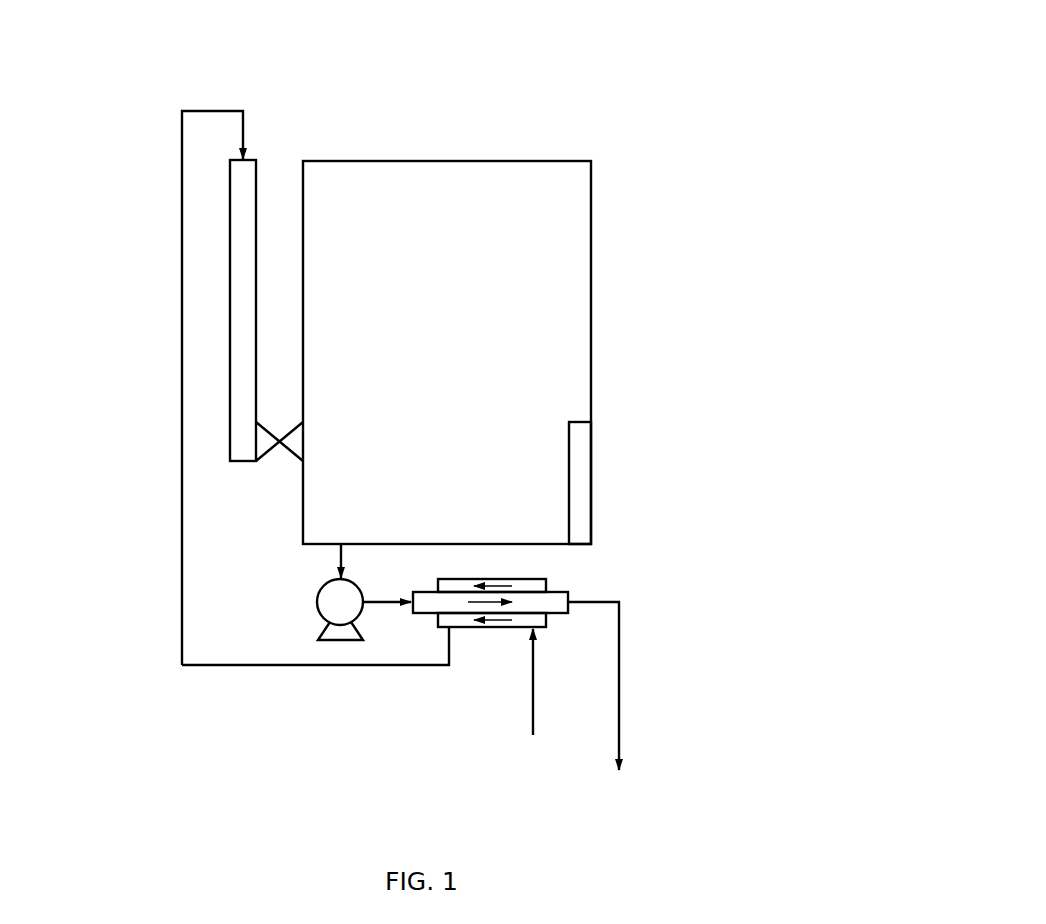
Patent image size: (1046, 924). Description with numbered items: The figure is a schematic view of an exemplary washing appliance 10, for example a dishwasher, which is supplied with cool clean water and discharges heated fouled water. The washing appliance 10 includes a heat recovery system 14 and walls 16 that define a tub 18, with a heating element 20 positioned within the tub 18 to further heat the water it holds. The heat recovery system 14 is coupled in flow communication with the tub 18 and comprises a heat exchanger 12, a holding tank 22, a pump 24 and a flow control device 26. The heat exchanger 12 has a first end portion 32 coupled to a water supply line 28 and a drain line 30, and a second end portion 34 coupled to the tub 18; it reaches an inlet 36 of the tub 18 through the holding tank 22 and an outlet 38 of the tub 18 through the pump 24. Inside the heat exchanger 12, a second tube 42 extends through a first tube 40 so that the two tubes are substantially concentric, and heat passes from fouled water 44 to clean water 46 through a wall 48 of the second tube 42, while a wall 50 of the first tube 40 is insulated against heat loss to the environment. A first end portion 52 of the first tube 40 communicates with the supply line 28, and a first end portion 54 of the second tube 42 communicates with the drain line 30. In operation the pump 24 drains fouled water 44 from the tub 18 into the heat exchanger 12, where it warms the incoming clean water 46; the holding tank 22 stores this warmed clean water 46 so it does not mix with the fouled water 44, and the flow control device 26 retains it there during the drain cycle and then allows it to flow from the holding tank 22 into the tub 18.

The washing appliance 10 is at (622, 72).
The heat exchanger 12 is at (525, 600).
The heat recovery system 14 is at (138, 308).
The walls 16 is at (460, 161).
The tub 18 is at (581, 338).
The heating element 20 is at (577, 460).
The holding tank 22 is at (243, 200).
The pump 24 is at (337, 641).
The flow control device 26 is at (265, 448).
The water supply line 28 is at (533, 718).
The drain line 30 is at (619, 695).
The first end portion 32 is at (559, 635).
The second end portion 34 is at (433, 681).
The inlet 36 is at (303, 422).
The outlet 38 is at (338, 552).
The first tube 40 is at (437, 582).
The second tube 42 is at (548, 603).
The fouled water 44 is at (470, 628).
The clean water 46 is at (500, 628).
The wall 48 is at (447, 640).
The wall 50 is at (470, 579).
The first end portion 52 is at (547, 622).
The first end portion 54 is at (570, 613).